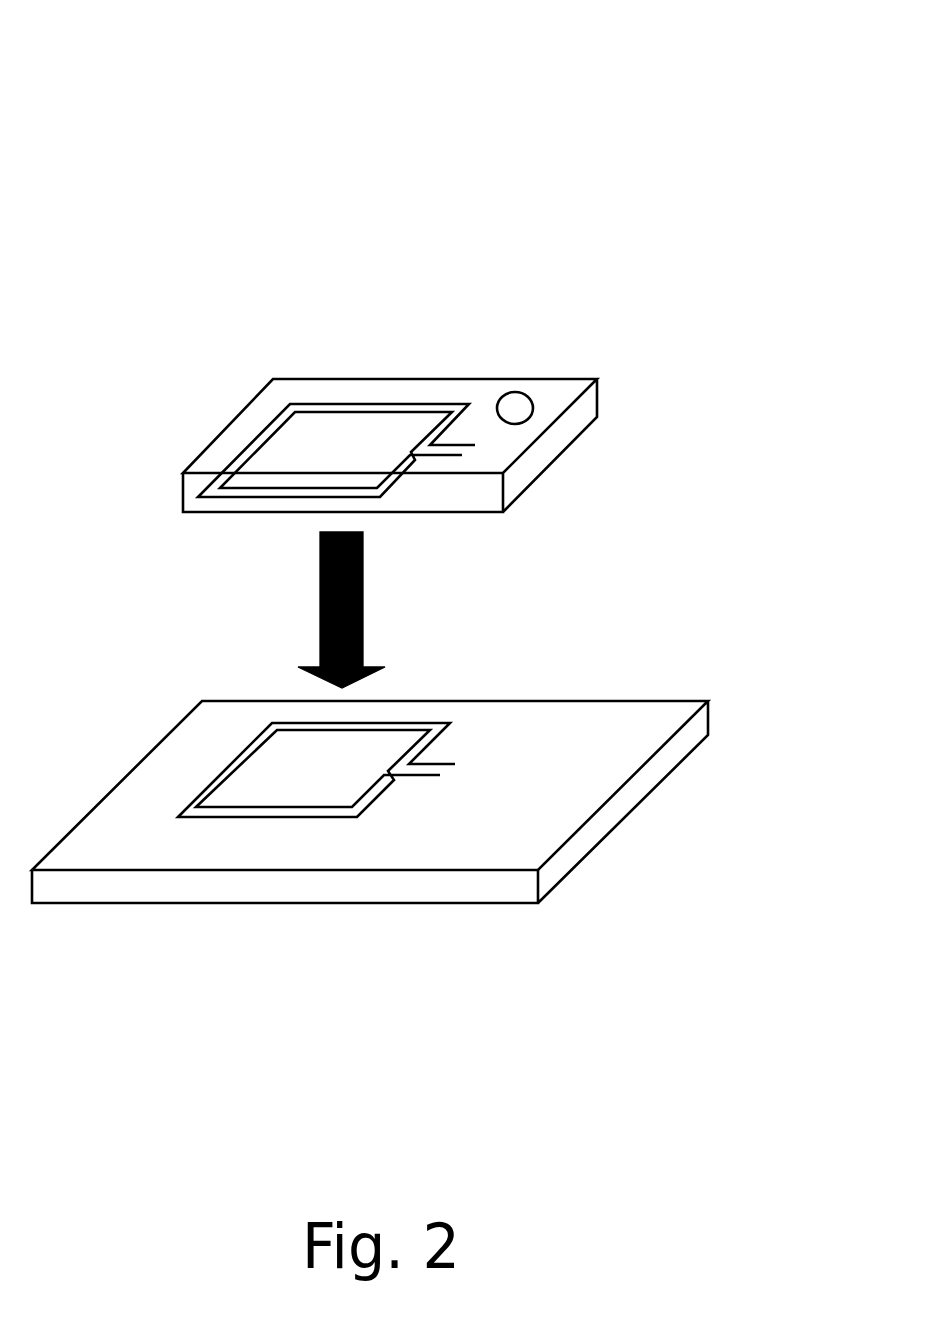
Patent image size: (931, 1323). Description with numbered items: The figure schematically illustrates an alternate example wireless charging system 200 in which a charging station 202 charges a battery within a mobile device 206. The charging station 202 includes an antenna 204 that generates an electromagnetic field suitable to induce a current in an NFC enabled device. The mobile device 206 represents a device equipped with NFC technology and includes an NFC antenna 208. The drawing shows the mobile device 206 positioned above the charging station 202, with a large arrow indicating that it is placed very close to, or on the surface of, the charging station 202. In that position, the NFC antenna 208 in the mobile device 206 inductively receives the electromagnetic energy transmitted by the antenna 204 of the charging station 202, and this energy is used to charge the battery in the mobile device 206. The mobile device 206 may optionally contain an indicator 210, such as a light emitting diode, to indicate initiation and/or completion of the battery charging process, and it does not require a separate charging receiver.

The wireless charging system 200 is at (672, 26).
The charging station 202 is at (716, 693).
The antenna 204 is at (453, 712).
The mobile device 206 is at (606, 374).
The NFC antenna 208 is at (294, 392).
The indicator 210 is at (518, 380).